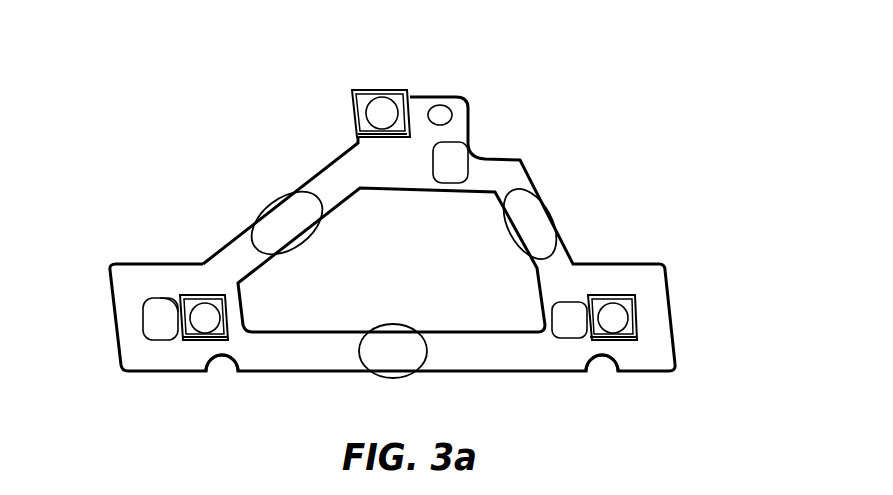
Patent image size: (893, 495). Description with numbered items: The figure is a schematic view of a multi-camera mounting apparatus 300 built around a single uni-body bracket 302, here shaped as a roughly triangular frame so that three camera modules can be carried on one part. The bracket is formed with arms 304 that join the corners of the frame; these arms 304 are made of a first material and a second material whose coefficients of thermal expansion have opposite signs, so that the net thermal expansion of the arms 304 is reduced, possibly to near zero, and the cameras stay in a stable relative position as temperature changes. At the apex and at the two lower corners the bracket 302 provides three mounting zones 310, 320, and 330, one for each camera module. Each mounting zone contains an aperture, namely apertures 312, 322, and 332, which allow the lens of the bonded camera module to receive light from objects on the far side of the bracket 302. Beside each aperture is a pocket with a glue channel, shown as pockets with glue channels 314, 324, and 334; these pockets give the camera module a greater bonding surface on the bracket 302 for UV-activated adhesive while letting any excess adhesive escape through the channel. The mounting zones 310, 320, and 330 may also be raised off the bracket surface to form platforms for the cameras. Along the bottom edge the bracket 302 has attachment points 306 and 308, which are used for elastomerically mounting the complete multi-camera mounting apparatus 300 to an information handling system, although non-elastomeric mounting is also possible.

The multi-camera mounting apparatus 300 is at (590, 148).
The uni-body bracket 302 is at (337, 152).
The arms 304 is at (270, 200).
The attachment point 306 is at (221, 378).
The attachment point 308 is at (622, 360).
The mounting zone 310 is at (378, 83).
The aperture 312 is at (361, 106).
The pocket with glue channel 314 is at (418, 104).
The mounting zone 320 is at (615, 290).
The aperture 322 is at (628, 302).
The pocket with glue channel 324 is at (641, 325).
The mounting zone 330 is at (203, 290).
The aperture 332 is at (193, 326).
The pocket with glue channel 334 is at (172, 312).